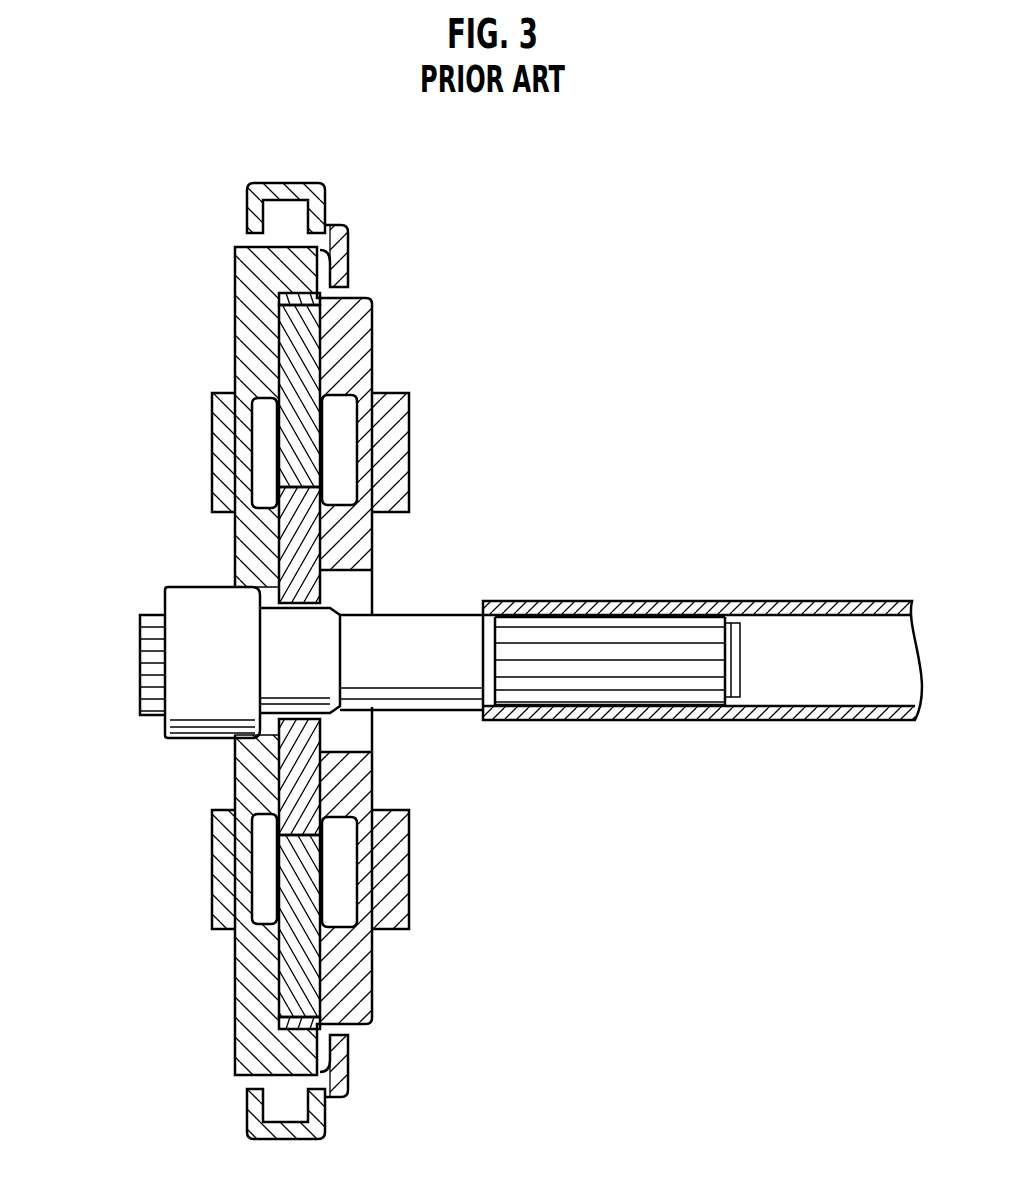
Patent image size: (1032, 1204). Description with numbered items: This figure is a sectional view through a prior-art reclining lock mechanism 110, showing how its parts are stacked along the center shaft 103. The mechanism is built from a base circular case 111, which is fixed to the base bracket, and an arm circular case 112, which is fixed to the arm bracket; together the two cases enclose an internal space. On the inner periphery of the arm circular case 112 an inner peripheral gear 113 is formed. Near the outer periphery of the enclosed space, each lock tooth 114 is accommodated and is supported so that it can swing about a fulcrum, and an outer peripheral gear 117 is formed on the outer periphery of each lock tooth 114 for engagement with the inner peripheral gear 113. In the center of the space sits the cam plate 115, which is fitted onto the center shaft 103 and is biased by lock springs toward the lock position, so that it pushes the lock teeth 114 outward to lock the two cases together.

The reclining lock mechanism 110 is at (117, 306).
The base circular case 111 is at (250, 347).
The arm circular case 112 is at (396, 433).
The inner peripheral gear 113 is at (285, 302).
The lock tooth 114 is at (298, 433).
The cam plate 115 is at (300, 548).
The outer peripheral gear 117 is at (345, 283).
The center shaft 103 is at (433, 630).